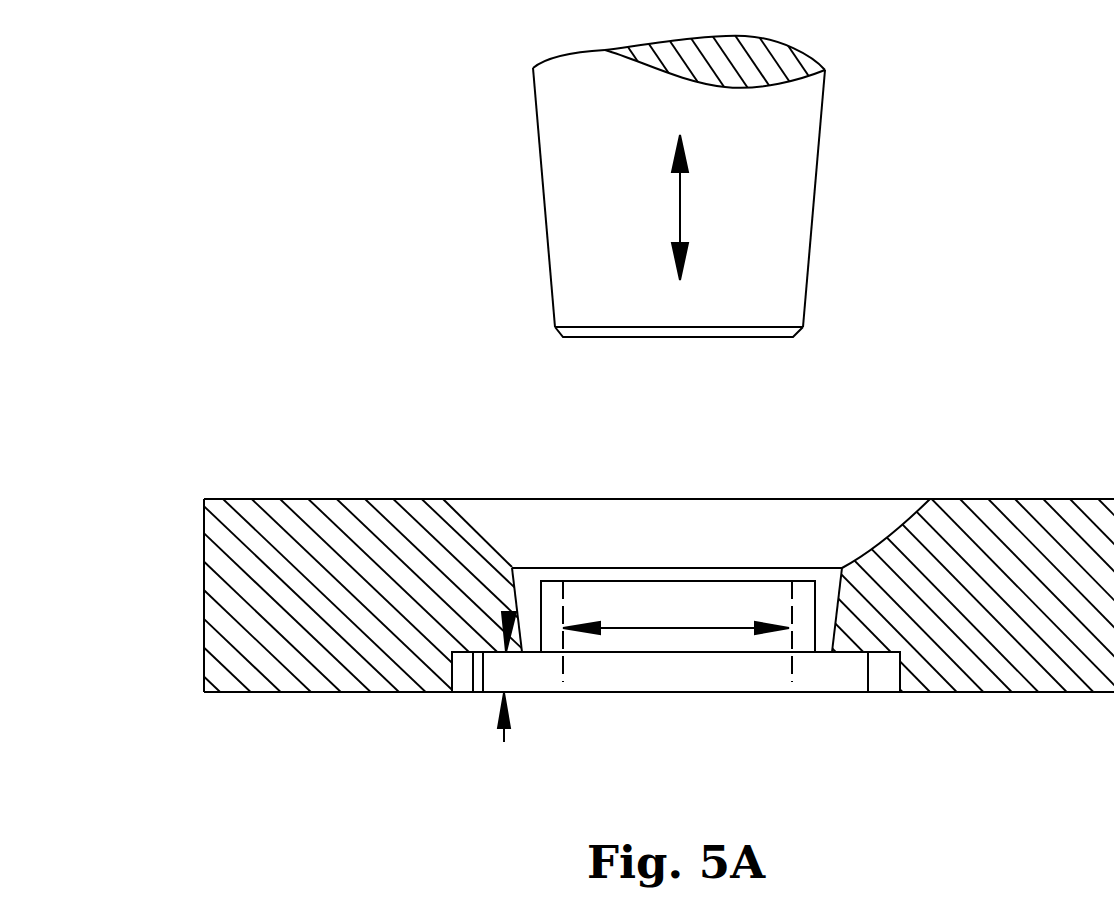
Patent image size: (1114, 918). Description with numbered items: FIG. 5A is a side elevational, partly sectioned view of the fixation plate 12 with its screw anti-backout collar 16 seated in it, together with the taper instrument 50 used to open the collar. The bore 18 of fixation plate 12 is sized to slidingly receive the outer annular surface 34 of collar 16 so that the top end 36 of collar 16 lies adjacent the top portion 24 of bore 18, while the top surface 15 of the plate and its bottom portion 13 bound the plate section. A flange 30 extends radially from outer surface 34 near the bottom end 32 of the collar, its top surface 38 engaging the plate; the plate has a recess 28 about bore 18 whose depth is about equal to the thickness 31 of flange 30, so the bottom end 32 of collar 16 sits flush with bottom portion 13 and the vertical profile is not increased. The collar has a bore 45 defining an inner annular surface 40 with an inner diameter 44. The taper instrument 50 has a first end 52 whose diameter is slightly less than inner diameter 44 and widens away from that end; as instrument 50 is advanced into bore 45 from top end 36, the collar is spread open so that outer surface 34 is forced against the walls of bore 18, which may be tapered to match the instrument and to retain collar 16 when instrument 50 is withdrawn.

The fixation plate 12 is at (204, 574).
The bottom portion of fixation plate 13 is at (1077, 692).
The top surface of base block 15 is at (266, 499).
The collar 16 is at (664, 608).
The bore of fixation plate 18 is at (498, 600).
The top portion of bore 24 is at (458, 540).
The recess 28 is at (470, 692).
The flange 30 is at (542, 692).
The thickness of flange 31 is at (553, 677).
The bottom end of collar 32 is at (720, 692).
The outer annular surface of collar 34 is at (816, 619).
The top end of collar 36 is at (735, 578).
The top surface of flange 38 is at (843, 652).
The inner annular surface of collar 40 is at (563, 672).
The inner diameter of collar 44 is at (670, 630).
The bore of collar 45 is at (638, 692).
The taper instrument 50 is at (812, 223).
The first end of taper instrument 52 is at (757, 337).